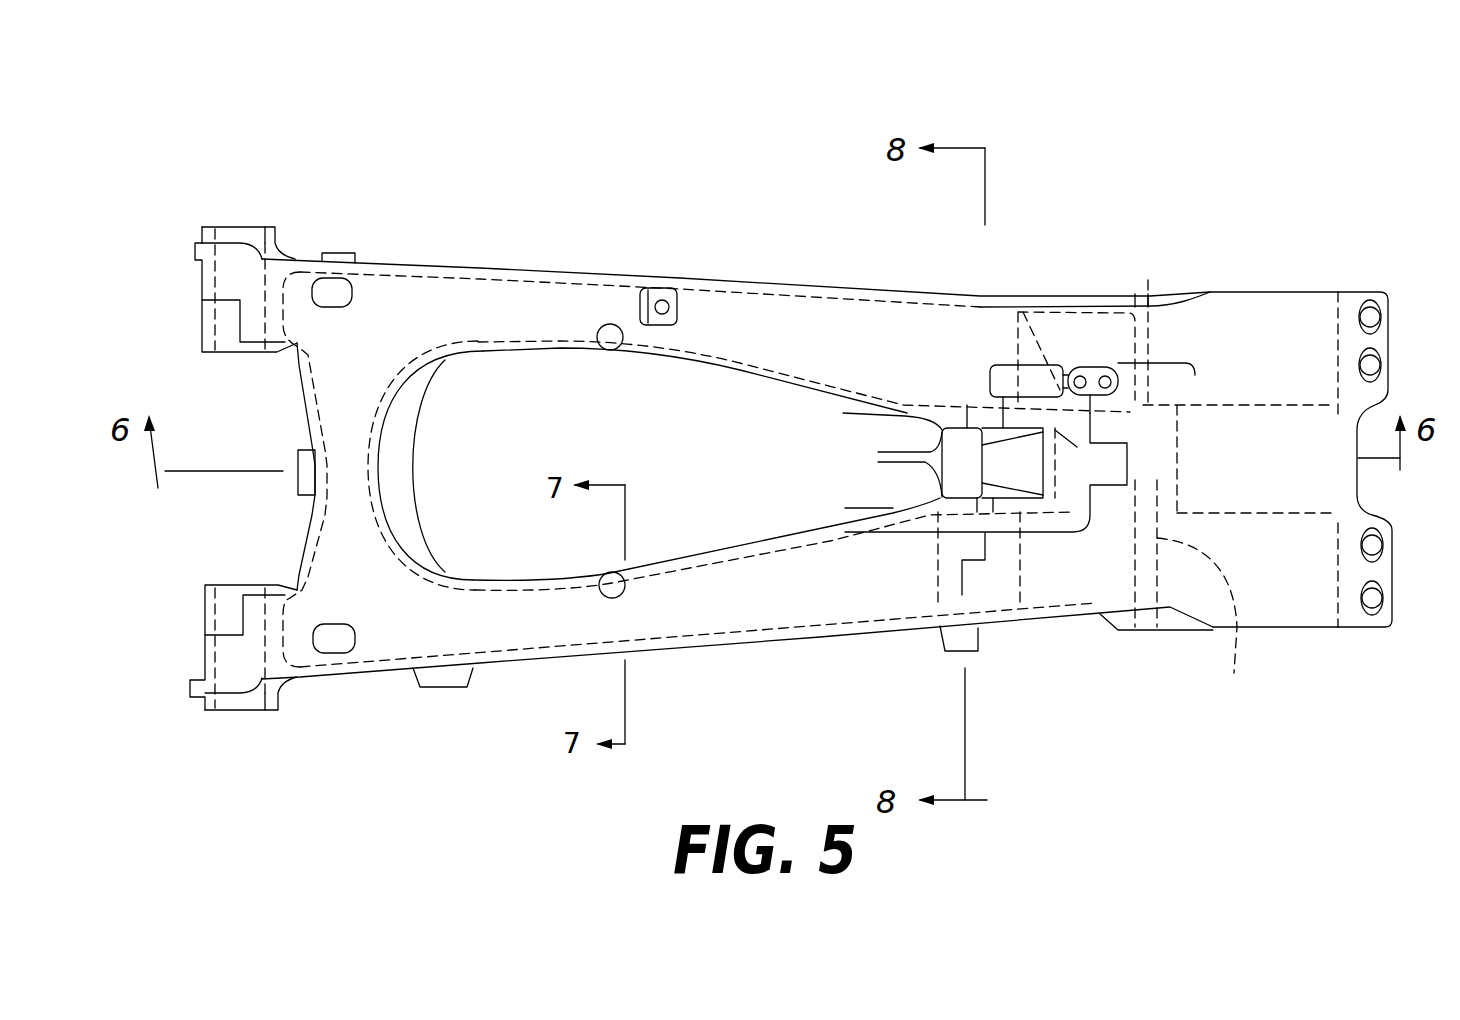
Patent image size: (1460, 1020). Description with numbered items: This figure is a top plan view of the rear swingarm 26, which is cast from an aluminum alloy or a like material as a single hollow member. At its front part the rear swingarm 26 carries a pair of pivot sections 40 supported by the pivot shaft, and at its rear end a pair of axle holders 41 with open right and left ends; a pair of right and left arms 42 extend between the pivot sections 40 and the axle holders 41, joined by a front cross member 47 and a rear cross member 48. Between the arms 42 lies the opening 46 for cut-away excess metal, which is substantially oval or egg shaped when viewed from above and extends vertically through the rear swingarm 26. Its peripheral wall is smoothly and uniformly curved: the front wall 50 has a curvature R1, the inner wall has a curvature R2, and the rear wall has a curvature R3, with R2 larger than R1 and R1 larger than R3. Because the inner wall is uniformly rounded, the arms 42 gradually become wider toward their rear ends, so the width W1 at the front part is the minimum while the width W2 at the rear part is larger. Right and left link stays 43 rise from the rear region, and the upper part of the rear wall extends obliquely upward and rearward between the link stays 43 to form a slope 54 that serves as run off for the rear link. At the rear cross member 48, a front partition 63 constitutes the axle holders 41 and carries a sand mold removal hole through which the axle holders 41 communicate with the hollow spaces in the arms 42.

The rear swingarm 26 is at (544, 157).
The pivot sections 40 is at (238, 225).
The axle holders 41 is at (1288, 323).
The arms 42 is at (705, 302).
The link stays 43 is at (982, 413).
The opening 46 is at (738, 451).
The front cross member 47 is at (332, 413).
The rear cross member 48 is at (1043, 573).
The front wall 50 is at (395, 445).
The slope 54 is at (1010, 470).
The front partition 63 is at (1155, 285).
The curvature of the front wall R1 is at (410, 387).
The curvature of the inner wall R2 is at (660, 353).
The curvature of the rear wall R3 is at (888, 464).
The width at the front part W1 is at (484, 383).
The width at the rear part W2 is at (910, 413).